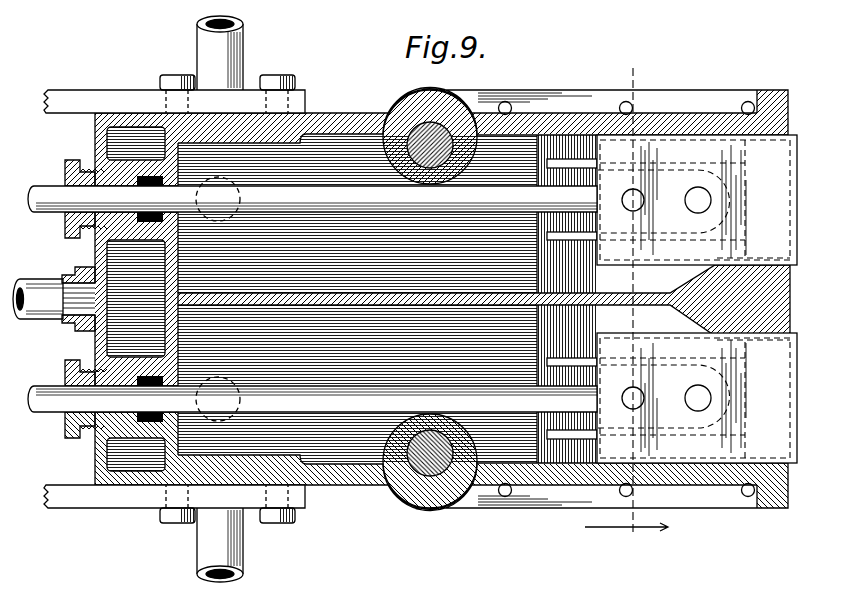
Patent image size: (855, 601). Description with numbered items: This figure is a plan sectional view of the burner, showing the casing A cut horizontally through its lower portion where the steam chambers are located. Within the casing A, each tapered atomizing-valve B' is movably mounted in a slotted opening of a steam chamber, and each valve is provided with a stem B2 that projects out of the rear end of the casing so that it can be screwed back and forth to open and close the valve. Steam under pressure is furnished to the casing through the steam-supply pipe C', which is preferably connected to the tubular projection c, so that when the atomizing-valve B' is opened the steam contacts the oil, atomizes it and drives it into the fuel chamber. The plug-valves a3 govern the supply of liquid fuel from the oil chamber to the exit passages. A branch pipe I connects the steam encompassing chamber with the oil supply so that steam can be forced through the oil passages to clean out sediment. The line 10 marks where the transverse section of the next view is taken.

The casing A is at (417, 311).
The plug-valve a3 is at (418, 133).
The atomizing-valve B' is at (667, 299).
The valve-stem B2 is at (53, 212).
The tubular projection c is at (233, 225).
The steam-supply pipe C' is at (219, 303).
The branch pipe I is at (50, 318).
The section line 10 is at (626, 314).